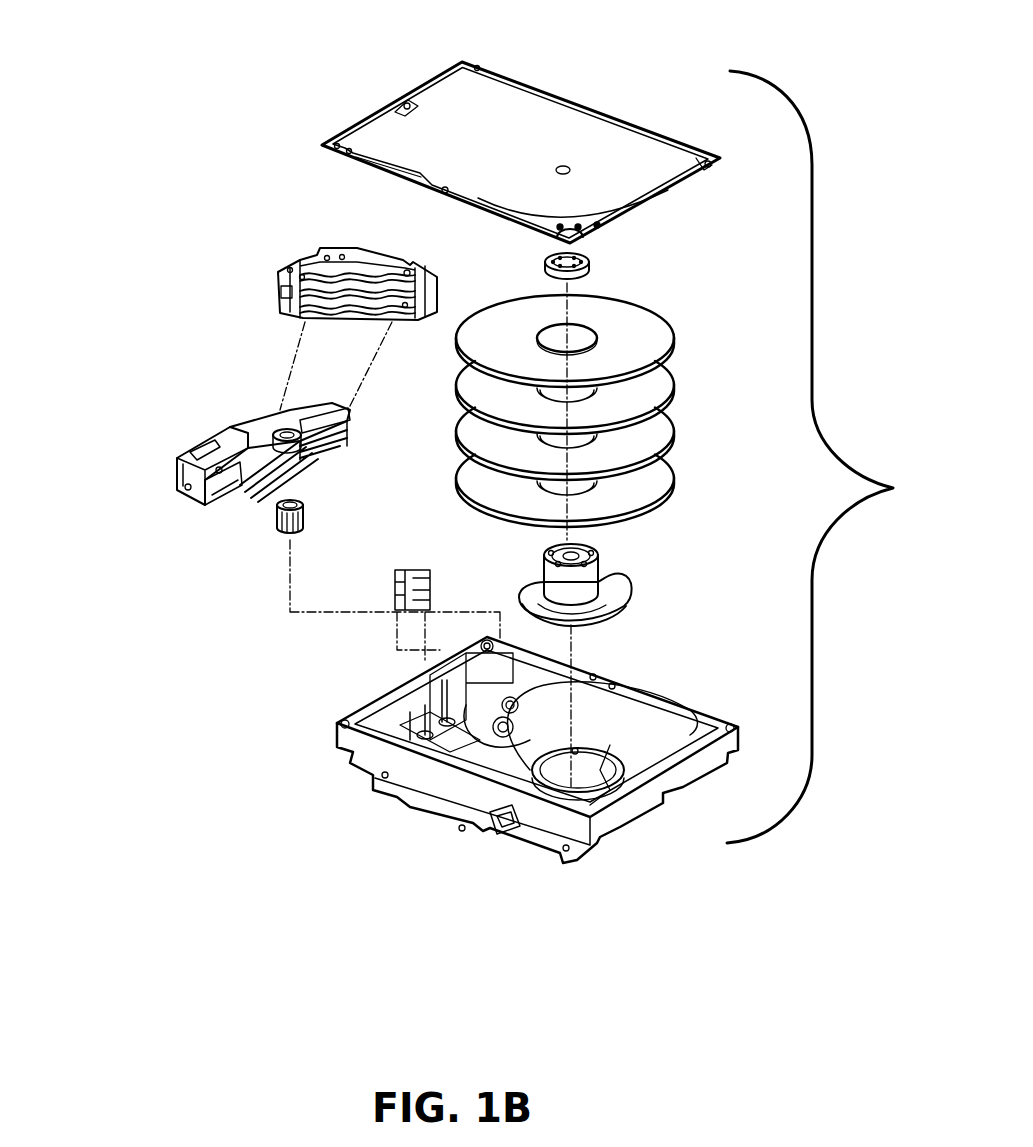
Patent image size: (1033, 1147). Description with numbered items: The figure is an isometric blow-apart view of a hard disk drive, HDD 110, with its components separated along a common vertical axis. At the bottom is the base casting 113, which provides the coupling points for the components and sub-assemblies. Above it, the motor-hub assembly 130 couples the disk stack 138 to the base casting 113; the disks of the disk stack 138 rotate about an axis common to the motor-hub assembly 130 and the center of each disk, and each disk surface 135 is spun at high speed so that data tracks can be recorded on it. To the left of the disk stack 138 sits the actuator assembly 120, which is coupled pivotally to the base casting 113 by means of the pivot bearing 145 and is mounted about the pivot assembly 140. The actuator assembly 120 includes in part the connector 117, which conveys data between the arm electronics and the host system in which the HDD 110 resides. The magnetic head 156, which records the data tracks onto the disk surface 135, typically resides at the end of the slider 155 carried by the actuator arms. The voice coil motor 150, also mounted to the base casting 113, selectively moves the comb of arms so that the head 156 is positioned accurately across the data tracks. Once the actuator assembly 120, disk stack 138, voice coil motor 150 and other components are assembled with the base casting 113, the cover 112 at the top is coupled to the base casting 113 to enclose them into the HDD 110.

The HDD 110 is at (893, 452).
The cover 112 is at (527, 98).
The base casting 113 is at (352, 741).
The connector 117 is at (183, 452).
The actuator assembly 120 is at (195, 484).
The motor-hub assembly 130 is at (610, 602).
The disk surface 135 is at (733, 528).
The disk stack 138 is at (632, 382).
The pivot assembly 140 is at (280, 427).
The pivot bearing 145 is at (304, 518).
The voice coil motor (VCM) 150 is at (277, 257).
The slider 155 is at (266, 500).
The magnetic head 156 is at (225, 515).